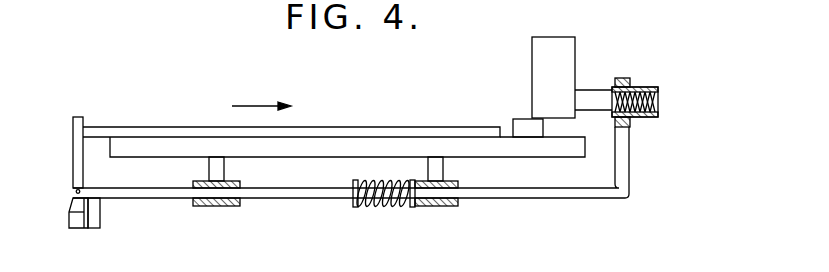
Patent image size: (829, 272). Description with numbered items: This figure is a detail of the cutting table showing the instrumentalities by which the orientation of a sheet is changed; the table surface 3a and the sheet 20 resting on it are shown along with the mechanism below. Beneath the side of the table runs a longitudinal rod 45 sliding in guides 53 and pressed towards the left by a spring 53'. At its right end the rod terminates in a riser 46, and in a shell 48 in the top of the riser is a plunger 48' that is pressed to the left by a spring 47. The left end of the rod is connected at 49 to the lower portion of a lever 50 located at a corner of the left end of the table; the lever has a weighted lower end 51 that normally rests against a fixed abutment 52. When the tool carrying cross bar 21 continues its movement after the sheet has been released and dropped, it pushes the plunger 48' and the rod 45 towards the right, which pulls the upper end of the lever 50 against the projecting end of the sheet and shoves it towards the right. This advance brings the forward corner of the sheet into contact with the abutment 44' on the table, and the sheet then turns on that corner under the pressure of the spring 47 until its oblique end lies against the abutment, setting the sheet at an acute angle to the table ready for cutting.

The upper rail 3a is at (358, 132).
The plate 20 is at (450, 137).
The tool carrying cross bar 21 is at (578, 52).
The abutment 44' is at (518, 104).
The longitudinal rod 45 is at (518, 193).
The riser 46 is at (630, 170).
The spring 47 is at (642, 88).
The shell 48 is at (645, 111).
The plunger 48' is at (595, 80).
The connection 49 is at (76, 192).
The lever 50 is at (76, 167).
The weighted lower end 51 is at (80, 230).
The fixed abutment 52 is at (103, 221).
The guide 53 is at (331, 199).
The spring 53' is at (382, 210).